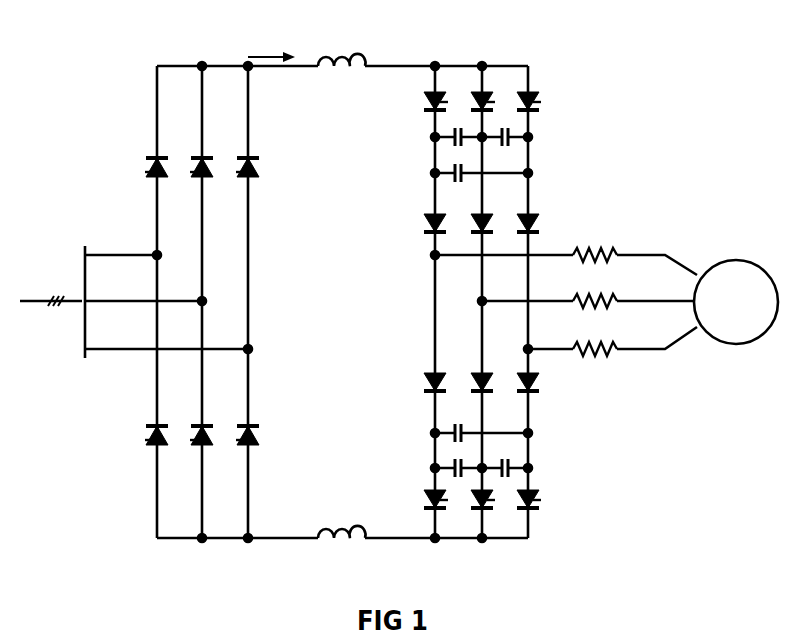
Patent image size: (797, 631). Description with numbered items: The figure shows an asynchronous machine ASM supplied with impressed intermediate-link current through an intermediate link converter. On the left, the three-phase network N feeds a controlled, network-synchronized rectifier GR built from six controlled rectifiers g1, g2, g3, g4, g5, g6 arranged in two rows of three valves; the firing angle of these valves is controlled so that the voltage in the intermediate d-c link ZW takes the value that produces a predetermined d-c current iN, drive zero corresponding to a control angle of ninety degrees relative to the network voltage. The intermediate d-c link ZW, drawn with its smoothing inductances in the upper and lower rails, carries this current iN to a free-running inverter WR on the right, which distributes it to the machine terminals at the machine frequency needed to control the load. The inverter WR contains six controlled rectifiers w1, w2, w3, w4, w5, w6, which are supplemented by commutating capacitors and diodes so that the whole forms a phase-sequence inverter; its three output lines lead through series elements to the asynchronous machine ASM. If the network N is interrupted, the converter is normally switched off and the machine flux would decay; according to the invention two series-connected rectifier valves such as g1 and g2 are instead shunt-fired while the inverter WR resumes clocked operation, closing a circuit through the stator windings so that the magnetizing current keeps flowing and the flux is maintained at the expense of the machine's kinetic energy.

The rectifier GR is at (189, 578).
The inverter WR is at (491, 578).
The intermediate d-c link ZW is at (320, 540).
The network N is at (136, 302).
The asynchronous machine ASM is at (736, 302).
The predetermined d-c current iN is at (271, 45).
The controlled rectifier g1 is at (151, 173).
The controlled rectifier g2 is at (151, 441).
The controlled rectifier g3 is at (196, 173).
The controlled rectifier g4 is at (196, 441).
The controlled rectifier g5 is at (242, 173).
The controlled rectifier g6 is at (242, 441).
The controlled rectifier w1 is at (424, 101).
The controlled rectifier w2 is at (428, 507).
The controlled rectifier w3 is at (478, 102).
The controlled rectifier w4 is at (488, 502).
The controlled rectifier w5 is at (522, 102).
The controlled rectifier w6 is at (537, 504).